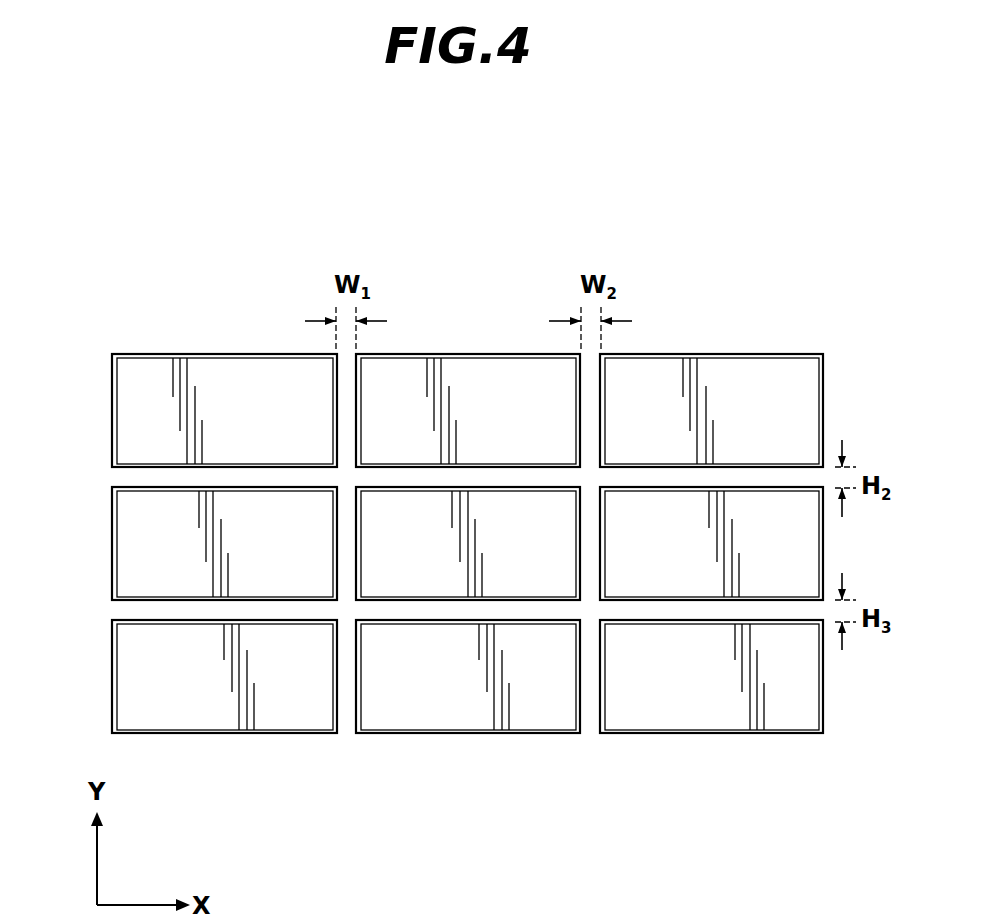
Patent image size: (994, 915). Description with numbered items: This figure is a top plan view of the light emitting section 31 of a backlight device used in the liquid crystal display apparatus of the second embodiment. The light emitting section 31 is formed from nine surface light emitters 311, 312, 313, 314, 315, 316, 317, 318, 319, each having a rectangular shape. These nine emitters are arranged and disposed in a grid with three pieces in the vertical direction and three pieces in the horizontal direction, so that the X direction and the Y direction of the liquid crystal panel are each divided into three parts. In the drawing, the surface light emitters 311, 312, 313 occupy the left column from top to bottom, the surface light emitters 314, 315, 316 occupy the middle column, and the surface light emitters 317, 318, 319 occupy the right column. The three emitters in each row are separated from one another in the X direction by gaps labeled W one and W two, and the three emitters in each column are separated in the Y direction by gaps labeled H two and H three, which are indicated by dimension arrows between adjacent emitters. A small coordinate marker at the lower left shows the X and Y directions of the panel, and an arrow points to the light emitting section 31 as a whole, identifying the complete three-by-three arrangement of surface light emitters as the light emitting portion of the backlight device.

The light emitting section 31 is at (646, 771).
The surface light emitter 311 is at (132, 415).
The surface light emitter 312 is at (133, 560).
The surface light emitter 313 is at (128, 702).
The surface light emitter 314 is at (479, 378).
The surface light emitter 315 is at (504, 583).
The surface light emitter 316 is at (462, 712).
The surface light emitter 317 is at (800, 405).
The surface light emitter 318 is at (793, 567).
The surface light emitter 319 is at (803, 707).